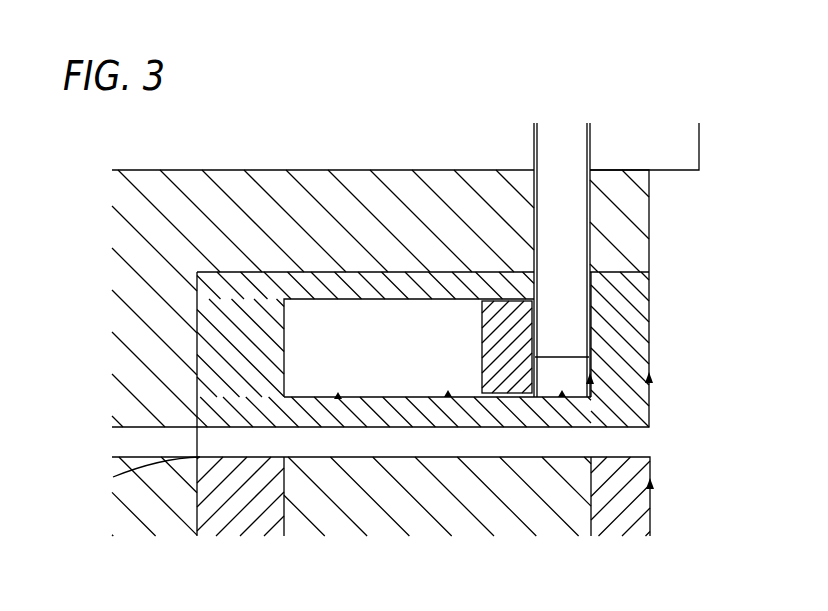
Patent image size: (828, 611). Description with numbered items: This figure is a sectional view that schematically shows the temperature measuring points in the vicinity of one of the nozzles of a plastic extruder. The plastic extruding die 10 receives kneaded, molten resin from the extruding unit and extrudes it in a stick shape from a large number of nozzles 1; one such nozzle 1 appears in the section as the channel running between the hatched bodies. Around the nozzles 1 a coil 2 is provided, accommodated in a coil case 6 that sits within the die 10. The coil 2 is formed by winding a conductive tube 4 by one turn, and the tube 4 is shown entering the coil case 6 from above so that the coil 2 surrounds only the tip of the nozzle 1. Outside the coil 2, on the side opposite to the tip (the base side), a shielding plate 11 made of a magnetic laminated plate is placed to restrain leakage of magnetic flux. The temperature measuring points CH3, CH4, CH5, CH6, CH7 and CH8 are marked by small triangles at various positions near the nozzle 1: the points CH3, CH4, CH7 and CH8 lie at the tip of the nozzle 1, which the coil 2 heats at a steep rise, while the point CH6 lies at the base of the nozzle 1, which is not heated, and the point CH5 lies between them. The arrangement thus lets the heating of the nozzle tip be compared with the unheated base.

The nozzle 1 is at (203, 443).
The coil 2 is at (567, 355).
The conductive tube 4 is at (588, 141).
The coil case 6 is at (303, 283).
The plastic extruding die 10 is at (436, 178).
The shielding plate 11 is at (482, 338).
The temperature measuring point CH3 is at (593, 383).
The temperature measuring point CH4 is at (565, 399).
The temperature measuring point CH5 is at (446, 384).
The temperature measuring point CH6 is at (338, 385).
The temperature measuring point CH7 is at (673, 378).
The temperature measuring point CH8 is at (673, 483).